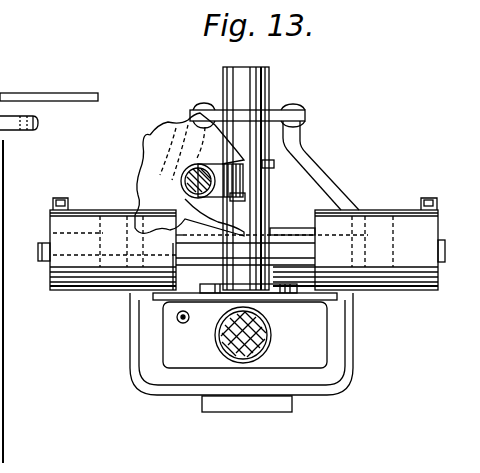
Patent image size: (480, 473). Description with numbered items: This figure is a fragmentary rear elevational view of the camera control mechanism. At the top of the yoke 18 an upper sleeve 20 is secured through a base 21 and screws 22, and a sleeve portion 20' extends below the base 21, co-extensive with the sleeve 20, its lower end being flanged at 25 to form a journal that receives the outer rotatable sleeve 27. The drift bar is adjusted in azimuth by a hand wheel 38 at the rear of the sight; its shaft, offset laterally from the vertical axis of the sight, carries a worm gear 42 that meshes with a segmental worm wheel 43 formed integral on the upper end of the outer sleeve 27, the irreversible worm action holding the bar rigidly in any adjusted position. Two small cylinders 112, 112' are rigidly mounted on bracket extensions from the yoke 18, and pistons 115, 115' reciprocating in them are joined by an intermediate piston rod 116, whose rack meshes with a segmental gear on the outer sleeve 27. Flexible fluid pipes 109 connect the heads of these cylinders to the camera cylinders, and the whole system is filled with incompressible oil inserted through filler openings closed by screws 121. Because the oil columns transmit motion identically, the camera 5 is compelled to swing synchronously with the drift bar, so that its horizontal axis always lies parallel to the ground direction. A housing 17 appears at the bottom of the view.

The camera 5 is at (7, 425).
The housing 17 is at (280, 403).
The yoke 18 is at (339, 187).
The sleeve 20 is at (262, 176).
The sleeve portion 20' is at (313, 137).
The base 21 is at (301, 115).
The screws 22 is at (201, 108).
The flange 25 is at (268, 170).
The outer rotatable sleeve 27 is at (246, 197).
The hand wheel 38 is at (150, 157).
The worm gear 42 is at (181, 175).
The segmental worm wheel 43 is at (245, 250).
The fluid pipe 109 is at (38, 246).
The cylinder 112 is at (359, 266).
The cylinder 112' is at (107, 266).
The piston 115 is at (376, 203).
The piston 115' is at (113, 294).
The intermediate piston rod 116 is at (287, 233).
The screws 121 is at (70, 192).